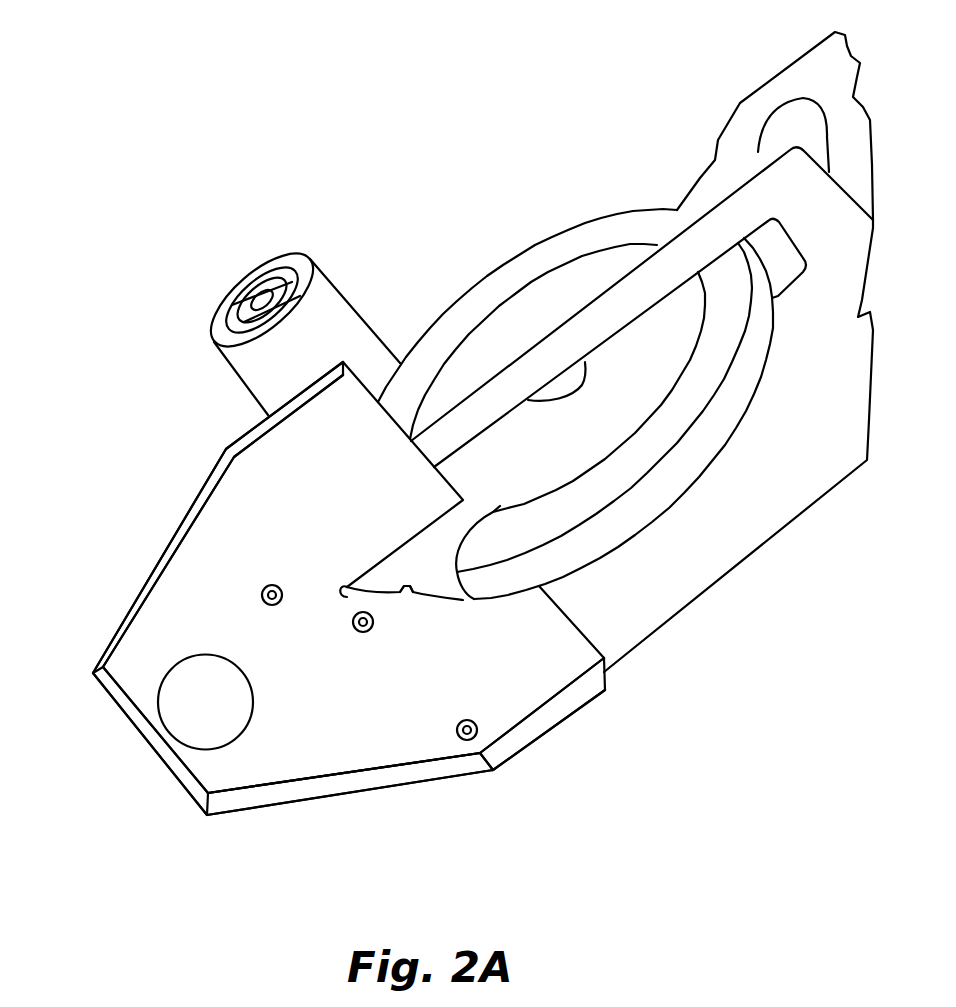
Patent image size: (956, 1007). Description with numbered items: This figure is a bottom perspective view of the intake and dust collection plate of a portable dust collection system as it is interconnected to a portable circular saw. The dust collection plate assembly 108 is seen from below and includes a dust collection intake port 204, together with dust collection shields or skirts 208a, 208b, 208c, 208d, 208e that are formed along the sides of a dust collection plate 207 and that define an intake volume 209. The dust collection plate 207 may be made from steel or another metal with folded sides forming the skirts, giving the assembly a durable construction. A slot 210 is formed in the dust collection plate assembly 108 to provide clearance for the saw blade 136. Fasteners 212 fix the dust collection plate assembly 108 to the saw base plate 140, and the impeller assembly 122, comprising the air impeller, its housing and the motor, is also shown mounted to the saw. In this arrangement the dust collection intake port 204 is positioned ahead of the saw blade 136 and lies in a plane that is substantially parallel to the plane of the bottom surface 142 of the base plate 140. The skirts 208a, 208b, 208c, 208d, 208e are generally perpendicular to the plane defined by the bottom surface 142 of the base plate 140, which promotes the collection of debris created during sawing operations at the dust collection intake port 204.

The dust collection plate assembly 108 is at (368, 788).
The impeller assembly 122 is at (340, 292).
The saw blade 136 is at (410, 594).
The saw base plate 140 is at (648, 643).
The bottom surface 142 is at (712, 558).
The dust collection intake port 204 is at (205, 737).
The dust collection plate 207 is at (427, 745).
The dust collection skirt 208a is at (243, 437).
The dust collection skirt 208b is at (153, 578).
The dust collection skirt 208c is at (133, 716).
The dust collection skirt 208d is at (278, 795).
The dust collection skirt 208e is at (543, 720).
The intake volume 209 is at (323, 757).
The slot 210 is at (347, 597).
The fasteners 212 is at (267, 586).